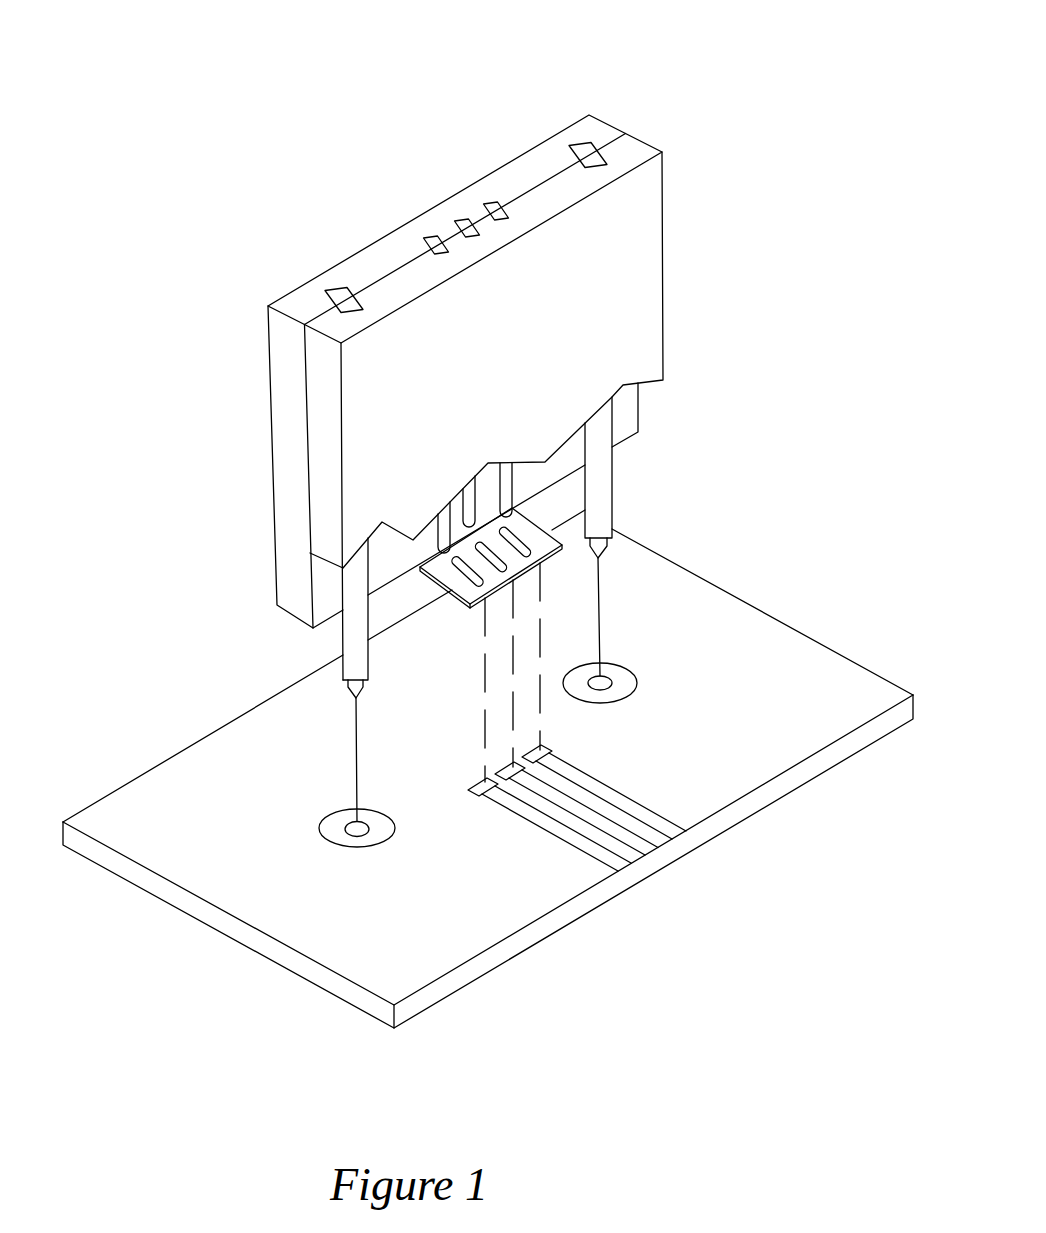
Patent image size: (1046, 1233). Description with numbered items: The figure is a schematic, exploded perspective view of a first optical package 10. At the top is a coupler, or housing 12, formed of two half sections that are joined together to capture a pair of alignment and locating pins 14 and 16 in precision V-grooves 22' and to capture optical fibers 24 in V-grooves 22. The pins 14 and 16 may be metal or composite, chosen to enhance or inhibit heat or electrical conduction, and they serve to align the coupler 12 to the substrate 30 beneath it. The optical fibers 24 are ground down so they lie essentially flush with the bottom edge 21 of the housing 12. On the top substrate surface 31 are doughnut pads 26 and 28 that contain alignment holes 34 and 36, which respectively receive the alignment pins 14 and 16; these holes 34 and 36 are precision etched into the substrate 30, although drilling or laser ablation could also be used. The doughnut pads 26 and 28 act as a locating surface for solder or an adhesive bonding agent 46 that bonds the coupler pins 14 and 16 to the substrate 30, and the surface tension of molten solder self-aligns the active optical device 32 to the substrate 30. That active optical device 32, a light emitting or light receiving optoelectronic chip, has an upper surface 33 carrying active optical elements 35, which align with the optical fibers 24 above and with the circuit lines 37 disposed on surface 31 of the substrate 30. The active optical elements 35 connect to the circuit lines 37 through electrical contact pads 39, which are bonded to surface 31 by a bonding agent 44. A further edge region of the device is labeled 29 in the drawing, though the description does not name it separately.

The optical package 10 is at (776, 64).
The coupler or housing 12 is at (663, 227).
The alignment pin 14 is at (615, 490).
The locating pin 16 is at (342, 634).
The bottom edge 21 is at (640, 417).
The V-grooves 22 is at (428, 217).
The V-grooves 22' is at (409, 209).
The optical fibers 24 is at (500, 485).
The doughnut pad 26 is at (373, 847).
The doughnut pad 28 is at (618, 700).
The circuit edge 29 is at (550, 547).
The substrate 30 is at (806, 713).
The top substrate surface 31 is at (532, 935).
The active optical device 32 is at (473, 601).
The upper surface 33 is at (560, 527).
The alignment hole 34 is at (608, 678).
The active optical elements 35 is at (535, 568).
The alignment hole 36 is at (345, 833).
The circuit lines 37 is at (667, 828).
The electrical contact pads 39 is at (478, 793).
The bonding agent 44 is at (488, 795).
The adhesive bonding agent 46 is at (348, 825).